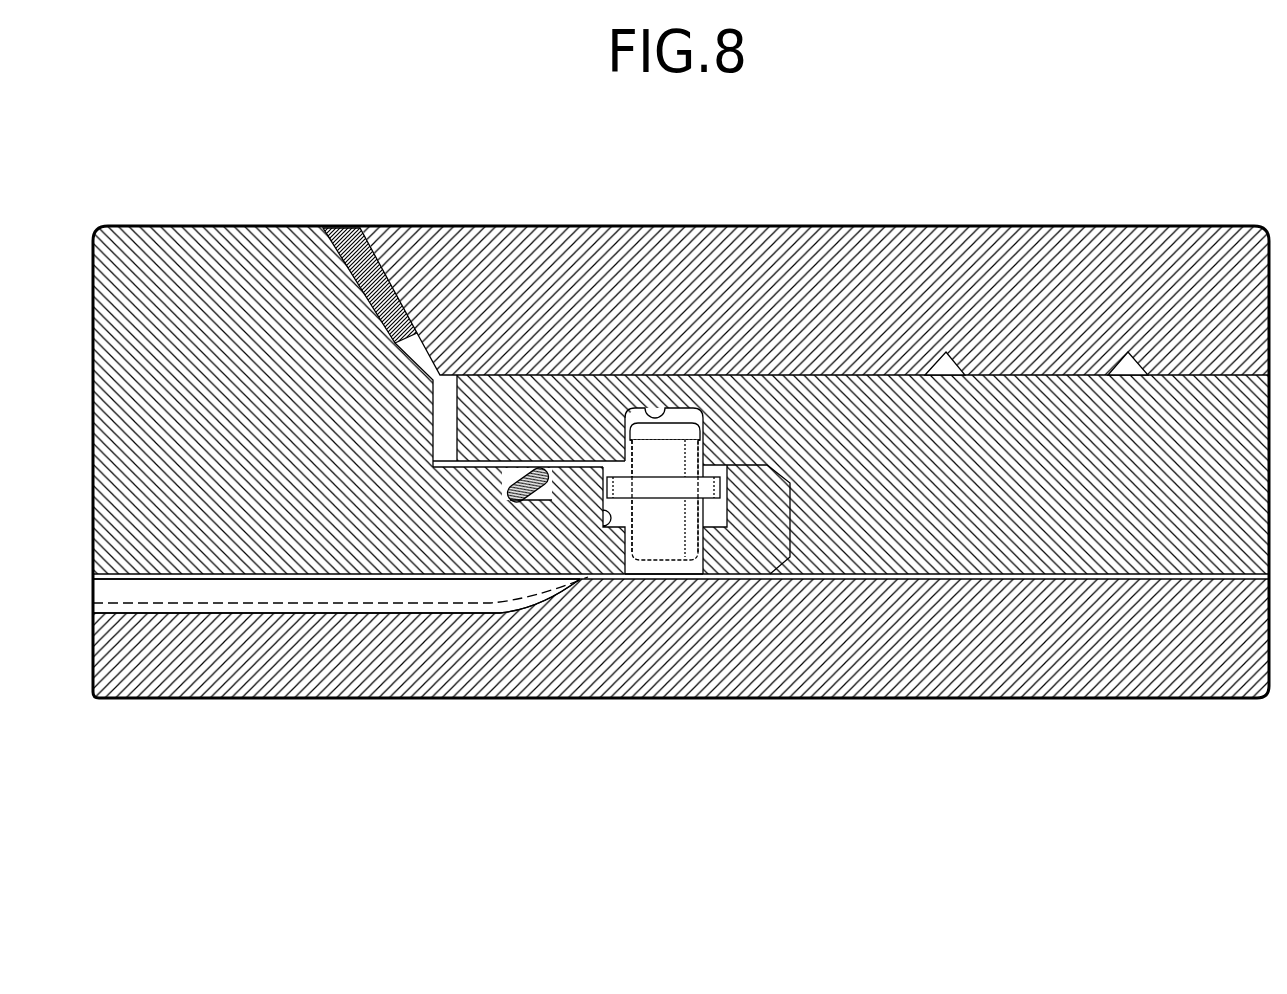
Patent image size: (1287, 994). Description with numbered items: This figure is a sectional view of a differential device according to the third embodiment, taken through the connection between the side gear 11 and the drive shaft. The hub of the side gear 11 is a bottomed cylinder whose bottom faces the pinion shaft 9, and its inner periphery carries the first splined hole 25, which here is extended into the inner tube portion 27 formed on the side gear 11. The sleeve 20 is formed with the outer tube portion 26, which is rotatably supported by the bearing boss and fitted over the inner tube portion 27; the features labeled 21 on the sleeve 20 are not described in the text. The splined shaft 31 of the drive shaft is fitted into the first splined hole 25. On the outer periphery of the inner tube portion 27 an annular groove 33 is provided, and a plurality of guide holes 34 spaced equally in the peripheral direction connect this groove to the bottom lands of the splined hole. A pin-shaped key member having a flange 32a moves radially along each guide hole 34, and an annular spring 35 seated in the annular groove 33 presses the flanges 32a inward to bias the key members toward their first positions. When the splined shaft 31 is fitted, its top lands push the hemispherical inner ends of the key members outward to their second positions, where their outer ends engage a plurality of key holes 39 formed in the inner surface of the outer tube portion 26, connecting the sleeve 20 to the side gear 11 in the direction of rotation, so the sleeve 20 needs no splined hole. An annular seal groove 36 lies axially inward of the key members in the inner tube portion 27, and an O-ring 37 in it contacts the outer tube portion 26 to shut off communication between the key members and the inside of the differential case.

The pinion shaft 9 is at (660, 150).
The side gear 11 is at (340, 434).
The sleeve 20 is at (1108, 491).
The engagement projection 21 is at (955, 375).
The first splined hole 25 is at (235, 625).
The outer tube portion 26 is at (506, 375).
The inner tube portion 27 is at (580, 460).
The splined shaft 31 is at (387, 598).
The flange 32a is at (664, 487).
The annular groove 33 is at (618, 530).
The guide hole 34 is at (645, 557).
The annular spring 35 is at (712, 477).
The annular seal groove 36 is at (504, 491).
The O-ring 37 is at (522, 501).
The key hole 39 is at (658, 404).